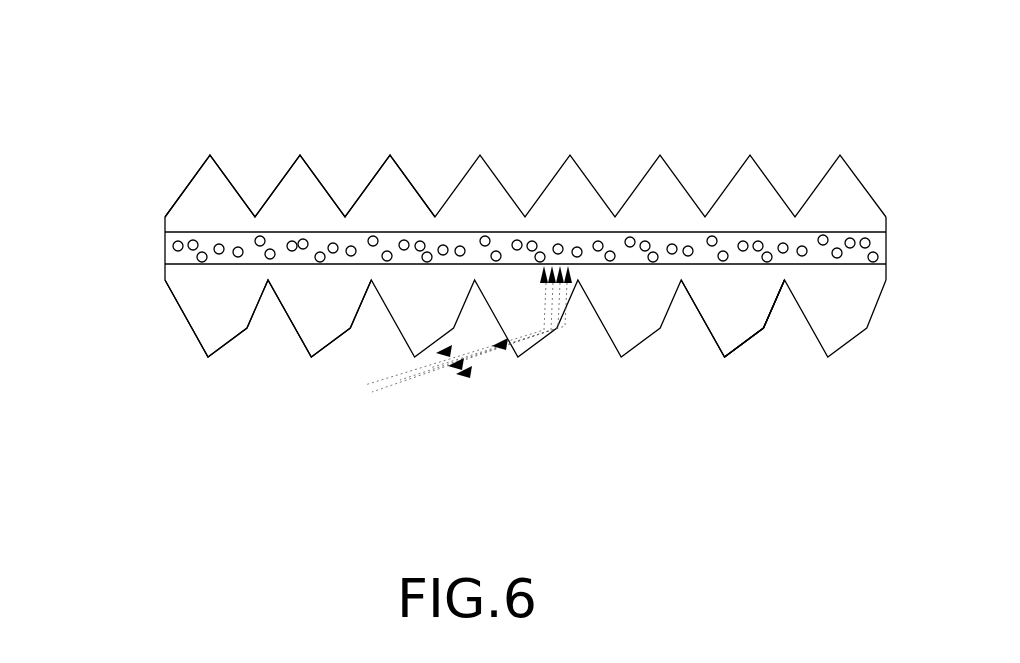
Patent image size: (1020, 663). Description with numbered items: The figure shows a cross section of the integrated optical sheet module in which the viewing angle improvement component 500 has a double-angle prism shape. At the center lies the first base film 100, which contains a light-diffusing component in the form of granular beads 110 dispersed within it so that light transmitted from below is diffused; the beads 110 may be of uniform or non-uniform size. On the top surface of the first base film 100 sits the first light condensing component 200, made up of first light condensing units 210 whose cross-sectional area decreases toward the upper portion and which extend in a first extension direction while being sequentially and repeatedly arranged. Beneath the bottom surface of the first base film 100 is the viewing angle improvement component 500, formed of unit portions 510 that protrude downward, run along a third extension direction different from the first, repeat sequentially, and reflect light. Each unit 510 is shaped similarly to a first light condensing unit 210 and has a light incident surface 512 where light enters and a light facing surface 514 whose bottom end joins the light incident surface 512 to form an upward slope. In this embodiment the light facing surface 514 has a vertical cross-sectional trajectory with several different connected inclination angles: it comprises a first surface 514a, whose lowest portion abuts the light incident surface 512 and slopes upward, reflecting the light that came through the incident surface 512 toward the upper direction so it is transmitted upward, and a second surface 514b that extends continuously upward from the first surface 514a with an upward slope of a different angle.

The first base film 100 is at (155, 254).
The bead 110 is at (165, 233).
The first light condensing component 200 is at (357, 52).
The first light condensing unit 210 is at (219, 190).
The viewing angle improvement component 500 is at (278, 447).
The unit portion 510 is at (200, 323).
The light incident surface 512 is at (707, 327).
The light facing surface 514 is at (833, 445).
The first surface 514a is at (747, 343).
The second surface 514b is at (775, 307).